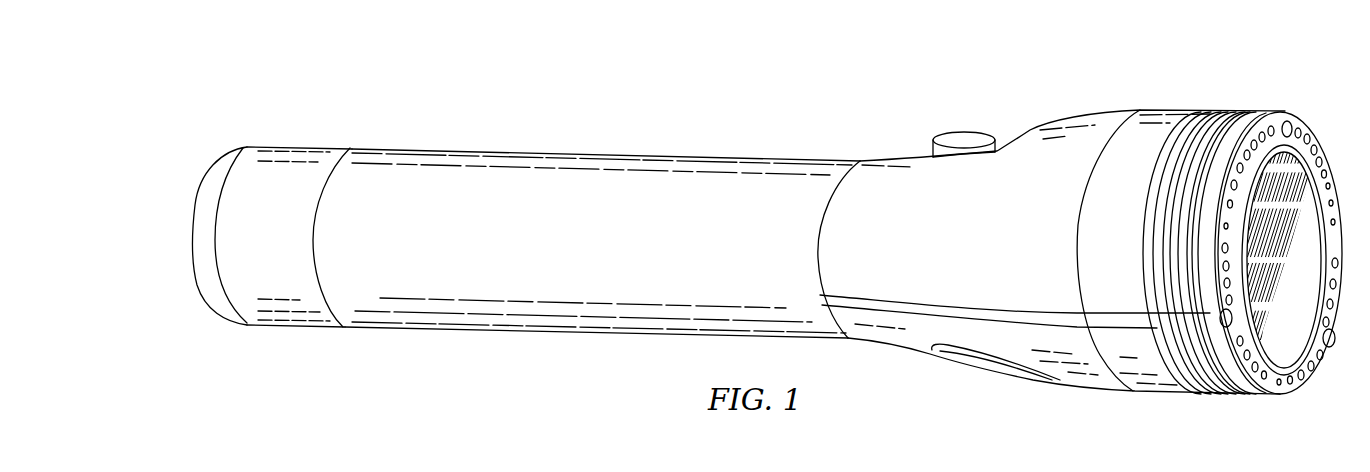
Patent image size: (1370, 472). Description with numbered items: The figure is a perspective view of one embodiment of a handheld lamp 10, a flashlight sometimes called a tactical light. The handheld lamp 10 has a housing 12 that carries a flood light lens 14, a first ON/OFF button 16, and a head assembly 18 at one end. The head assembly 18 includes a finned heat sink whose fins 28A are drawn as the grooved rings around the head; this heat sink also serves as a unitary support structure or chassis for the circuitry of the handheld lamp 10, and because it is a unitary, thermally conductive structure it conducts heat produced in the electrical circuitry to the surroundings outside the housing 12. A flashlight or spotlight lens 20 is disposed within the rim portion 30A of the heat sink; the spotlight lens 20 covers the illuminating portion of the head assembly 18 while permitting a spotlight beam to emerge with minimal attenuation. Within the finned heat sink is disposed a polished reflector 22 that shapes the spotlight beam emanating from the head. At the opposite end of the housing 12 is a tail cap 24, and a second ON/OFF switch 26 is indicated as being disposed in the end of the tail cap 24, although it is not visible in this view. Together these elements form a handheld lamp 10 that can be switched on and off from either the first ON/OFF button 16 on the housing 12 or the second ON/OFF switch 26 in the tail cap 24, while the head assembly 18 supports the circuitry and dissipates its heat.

The handheld lamp 10 is at (437, 96).
The housing 12 is at (636, 185).
The flood light lens 14 is at (984, 363).
The first ON/OFF button 16 is at (967, 138).
The head assembly 18 is at (1306, 97).
The spotlight lens 20 is at (1310, 215).
The polished reflector 22 is at (1286, 283).
The tail cap 24 is at (258, 146).
The second ON/OFF switch 26 is at (191, 306).
The fins 28A is at (1245, 113).
The rim portion 30A is at (1273, 395).